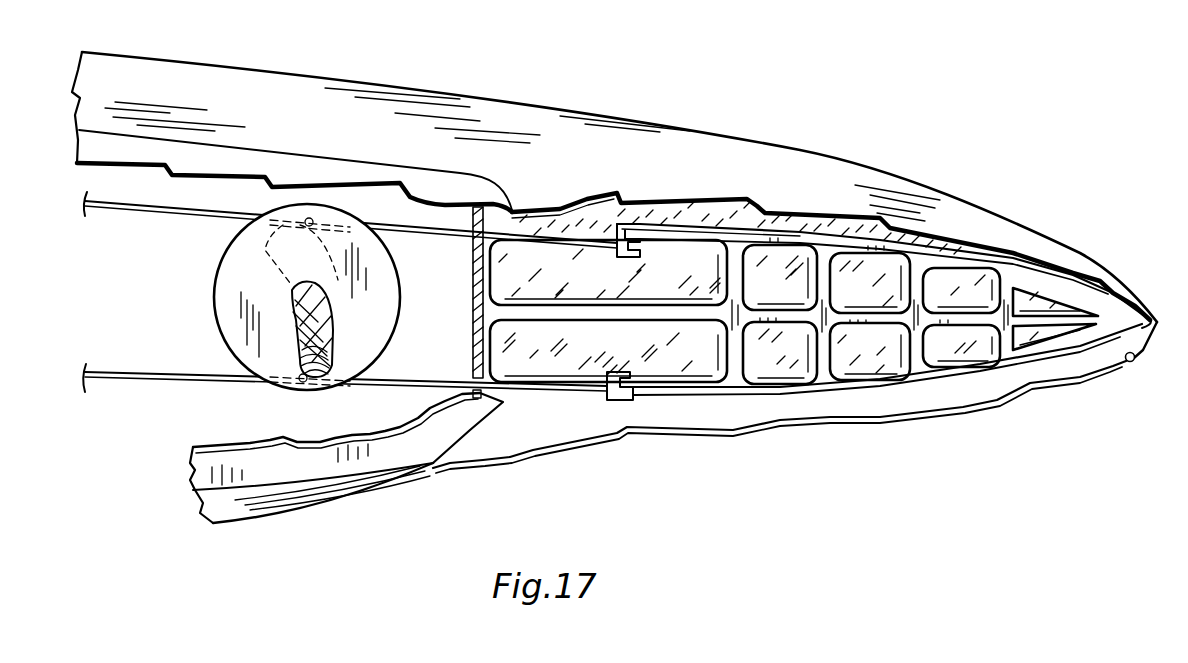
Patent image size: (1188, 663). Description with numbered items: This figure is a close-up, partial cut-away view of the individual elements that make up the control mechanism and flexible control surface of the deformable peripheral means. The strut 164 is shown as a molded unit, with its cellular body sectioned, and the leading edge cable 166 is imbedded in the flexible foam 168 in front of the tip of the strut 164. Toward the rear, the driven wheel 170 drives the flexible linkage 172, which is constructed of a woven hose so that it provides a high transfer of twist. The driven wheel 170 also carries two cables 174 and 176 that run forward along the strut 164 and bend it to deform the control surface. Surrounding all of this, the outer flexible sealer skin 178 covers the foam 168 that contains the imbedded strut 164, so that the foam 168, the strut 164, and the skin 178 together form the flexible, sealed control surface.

The strut 164 is at (992, 363).
The leading edge cable 166 is at (1143, 362).
The flexible foam 168 is at (727, 217).
The driven wheel 170 is at (237, 272).
The flexible linkage 172 is at (333, 312).
The cable 174 is at (442, 243).
The cable 176 is at (207, 373).
The outer flexible sealer skin 178 is at (767, 413).